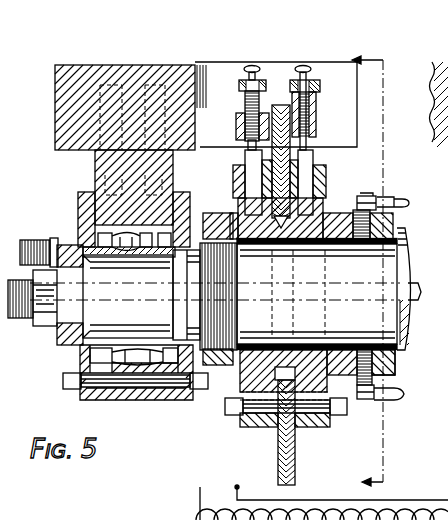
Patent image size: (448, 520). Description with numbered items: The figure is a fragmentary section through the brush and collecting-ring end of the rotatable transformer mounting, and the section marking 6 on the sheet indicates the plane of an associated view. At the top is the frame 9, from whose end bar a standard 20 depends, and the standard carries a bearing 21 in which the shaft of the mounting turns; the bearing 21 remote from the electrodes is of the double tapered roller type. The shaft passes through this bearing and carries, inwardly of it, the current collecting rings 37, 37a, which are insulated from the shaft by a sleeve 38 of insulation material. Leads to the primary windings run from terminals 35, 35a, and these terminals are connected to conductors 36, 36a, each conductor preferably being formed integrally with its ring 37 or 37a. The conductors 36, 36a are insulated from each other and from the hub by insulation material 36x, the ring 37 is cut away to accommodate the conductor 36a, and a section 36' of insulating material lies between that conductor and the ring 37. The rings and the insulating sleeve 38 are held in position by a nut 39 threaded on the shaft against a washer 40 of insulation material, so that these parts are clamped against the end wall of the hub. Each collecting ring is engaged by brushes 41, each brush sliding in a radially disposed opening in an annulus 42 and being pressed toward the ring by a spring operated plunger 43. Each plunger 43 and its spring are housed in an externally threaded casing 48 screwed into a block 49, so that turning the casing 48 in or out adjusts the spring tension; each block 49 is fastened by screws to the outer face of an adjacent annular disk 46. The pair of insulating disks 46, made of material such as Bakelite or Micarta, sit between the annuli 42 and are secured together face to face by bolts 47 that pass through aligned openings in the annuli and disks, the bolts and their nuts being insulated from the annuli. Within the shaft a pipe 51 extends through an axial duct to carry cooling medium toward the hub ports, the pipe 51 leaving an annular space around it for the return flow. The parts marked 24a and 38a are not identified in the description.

The frame 9 is at (64, 68).
The standard 20 is at (100, 164).
The bearing 21 is at (137, 362).
The spring operated plunger 43 is at (252, 66).
The casing 48 is at (241, 86).
The block 49 is at (237, 124).
The brush 41 is at (250, 160).
The annulus 42 is at (233, 178).
The current collecting ring 37a is at (236, 210).
The current collecting ring 37 is at (358, 212).
The conductor 36 is at (365, 203).
The terminal 35 is at (380, 196).
The end cap 24a is at (403, 250).
The sleeve 38 is at (343, 240).
The pipe 51 is at (419, 291).
The washer 40 is at (240, 326).
The section of insulation material 36' is at (317, 292).
The conductor 36a is at (353, 347).
The cylinder flange 38a is at (398, 370).
The terminal 35a is at (380, 392).
The nut 39 is at (230, 370).
The bolt 47 is at (230, 407).
The annular disk 46 is at (278, 459).
The insulation material 36x is at (345, 375).
The section line 6- 6 is at (385, 263).